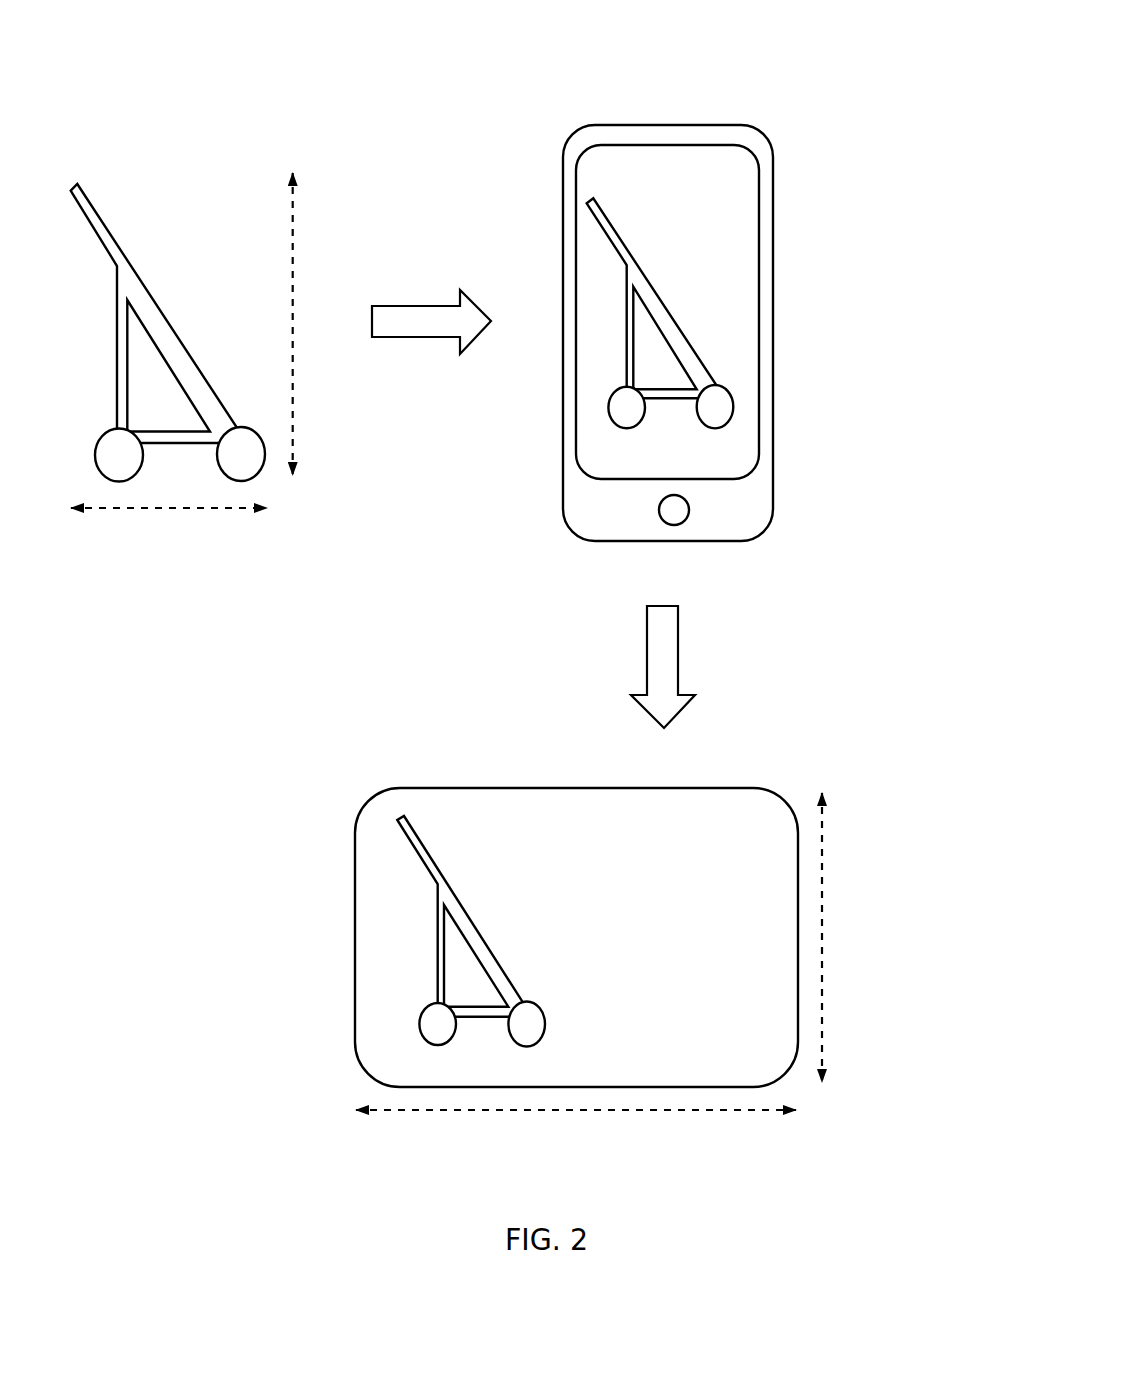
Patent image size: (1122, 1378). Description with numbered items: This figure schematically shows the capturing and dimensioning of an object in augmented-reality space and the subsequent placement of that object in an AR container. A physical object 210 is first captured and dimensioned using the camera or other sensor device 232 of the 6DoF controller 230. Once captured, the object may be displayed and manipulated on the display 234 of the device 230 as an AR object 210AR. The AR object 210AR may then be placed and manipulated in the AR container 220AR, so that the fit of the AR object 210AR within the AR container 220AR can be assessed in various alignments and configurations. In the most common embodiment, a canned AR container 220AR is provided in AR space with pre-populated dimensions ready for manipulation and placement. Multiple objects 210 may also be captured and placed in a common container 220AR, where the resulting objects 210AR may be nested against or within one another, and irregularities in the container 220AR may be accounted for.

The object 210 is at (203, 210).
The AR object 210AR is at (650, 251).
The AR container 220AR is at (631, 845).
The 6DoF controller 230 is at (773, 298).
The camera or other sensor device 232 is at (779, 228).
The display 234 is at (784, 788).